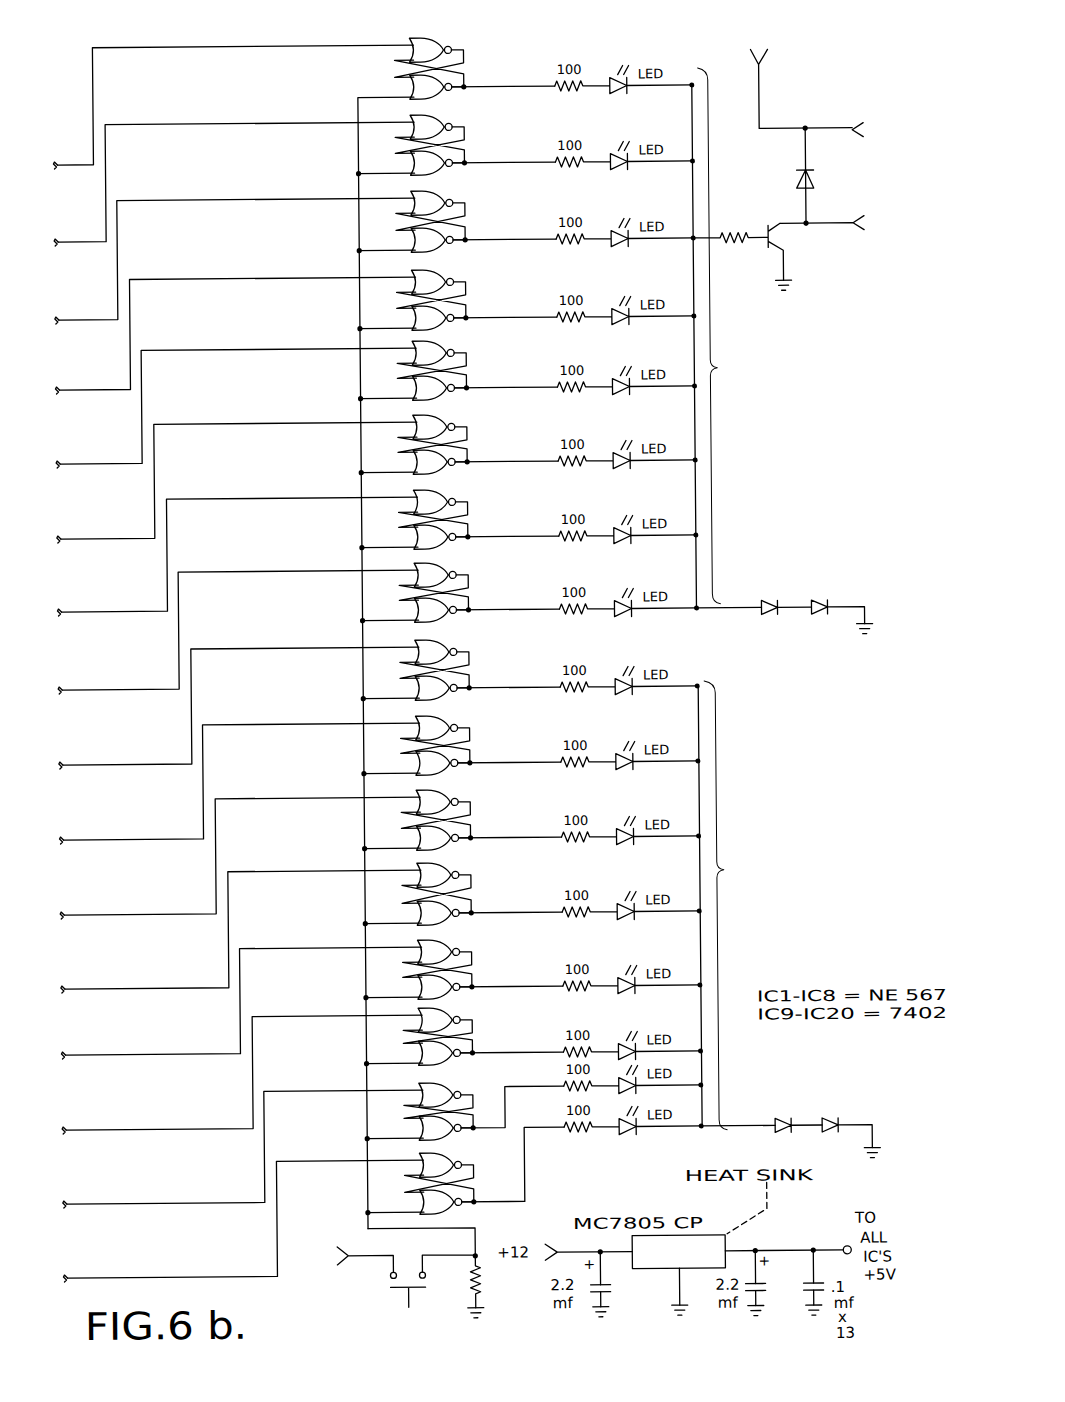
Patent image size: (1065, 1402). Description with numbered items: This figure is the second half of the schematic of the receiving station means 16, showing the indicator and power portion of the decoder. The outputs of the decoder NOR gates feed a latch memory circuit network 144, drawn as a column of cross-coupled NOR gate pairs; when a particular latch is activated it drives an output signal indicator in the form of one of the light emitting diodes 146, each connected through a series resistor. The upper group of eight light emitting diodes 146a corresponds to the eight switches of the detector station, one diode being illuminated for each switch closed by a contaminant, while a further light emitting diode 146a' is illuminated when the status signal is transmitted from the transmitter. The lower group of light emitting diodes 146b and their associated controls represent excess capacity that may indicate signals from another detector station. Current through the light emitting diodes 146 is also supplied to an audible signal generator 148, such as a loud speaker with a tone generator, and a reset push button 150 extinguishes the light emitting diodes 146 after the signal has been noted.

The latch memory circuit network 144 is at (477, 49).
The light emitting diodes 146 is at (633, 47).
The light emitting diodes corresponding to the switches 146a is at (739, 335).
The status light emitting diode 146a' is at (743, 346).
The group of light emitting diodes 146b is at (747, 905).
The audible signal generator 148 is at (783, 108).
The reset push button 150 is at (351, 1231).
The receiving station means 16 is at (906, 700).